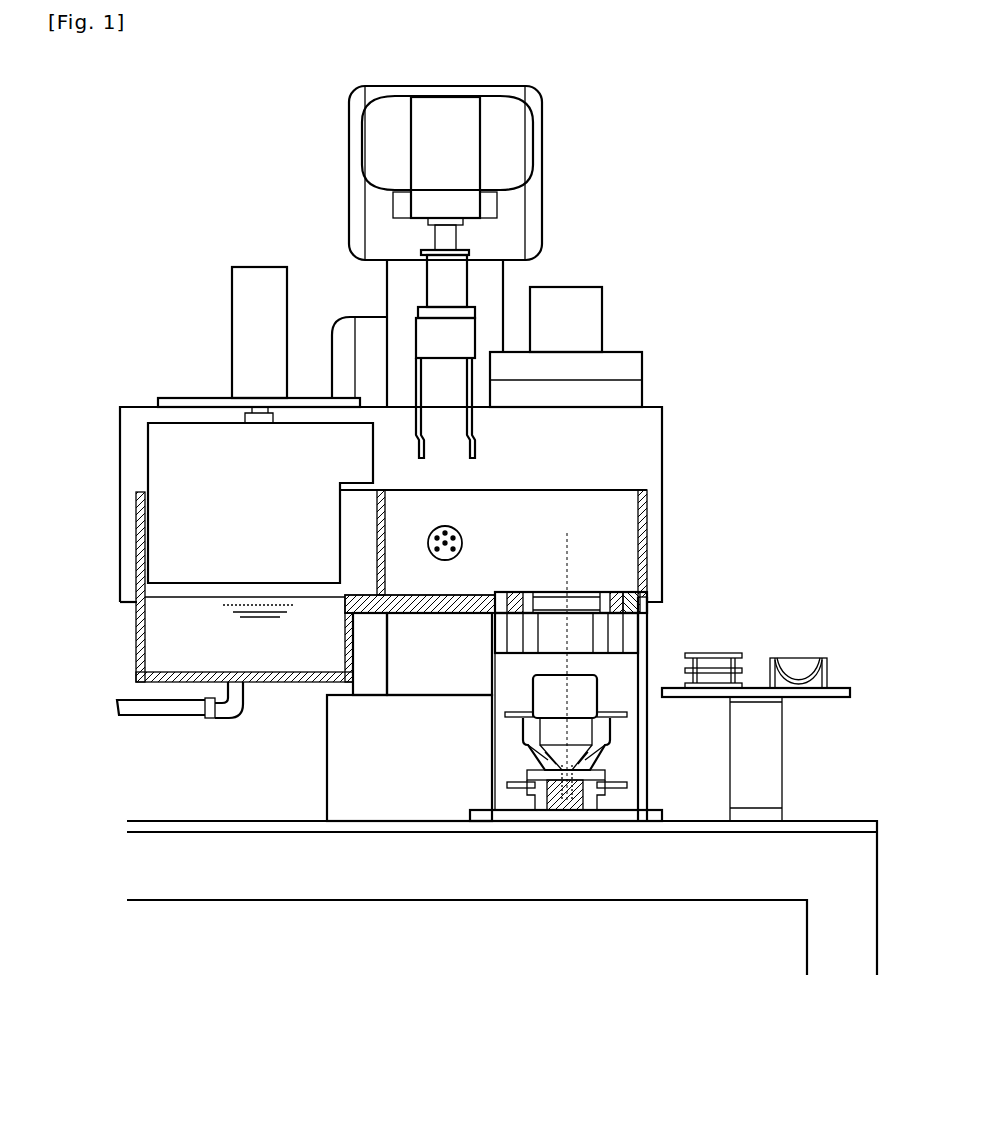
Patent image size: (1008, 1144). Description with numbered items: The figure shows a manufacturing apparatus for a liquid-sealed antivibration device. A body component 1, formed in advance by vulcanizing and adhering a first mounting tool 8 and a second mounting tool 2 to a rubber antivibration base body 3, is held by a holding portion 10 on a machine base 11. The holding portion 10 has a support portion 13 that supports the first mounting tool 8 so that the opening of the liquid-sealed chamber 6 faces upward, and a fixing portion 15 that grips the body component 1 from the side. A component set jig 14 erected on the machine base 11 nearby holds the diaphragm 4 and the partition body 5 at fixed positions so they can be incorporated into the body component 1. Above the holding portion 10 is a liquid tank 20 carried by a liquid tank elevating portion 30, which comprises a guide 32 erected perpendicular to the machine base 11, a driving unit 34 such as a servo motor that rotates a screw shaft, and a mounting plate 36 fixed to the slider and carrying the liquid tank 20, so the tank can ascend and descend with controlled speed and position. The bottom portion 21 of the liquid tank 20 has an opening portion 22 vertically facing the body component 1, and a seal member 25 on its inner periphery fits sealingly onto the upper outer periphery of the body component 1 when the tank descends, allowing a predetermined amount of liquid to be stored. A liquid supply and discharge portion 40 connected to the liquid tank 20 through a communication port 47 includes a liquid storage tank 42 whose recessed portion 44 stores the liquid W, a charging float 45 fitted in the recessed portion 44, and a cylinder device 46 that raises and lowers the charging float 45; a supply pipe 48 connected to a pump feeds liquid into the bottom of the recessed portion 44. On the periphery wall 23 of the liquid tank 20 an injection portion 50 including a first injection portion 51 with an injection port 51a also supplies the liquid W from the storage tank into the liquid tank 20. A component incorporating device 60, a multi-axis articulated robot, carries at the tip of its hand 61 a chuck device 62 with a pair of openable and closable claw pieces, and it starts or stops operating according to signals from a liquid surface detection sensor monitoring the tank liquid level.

The body component 1 is at (517, 764).
The second mounting tool 2 is at (525, 735).
The antivibration base body 3 is at (545, 768).
The diaphragm 4 is at (800, 660).
The partition body 5 is at (707, 653).
The liquid-sealed chamber 6 is at (553, 680).
The first mounting tool 8 is at (530, 775).
The holding portion 10 is at (596, 812).
The machine base 11 is at (815, 821).
The support portion 13 is at (538, 812).
The component set jig 14 is at (800, 697).
The fixing portion 15 is at (515, 712).
The liquid tank 20 is at (649, 522).
The bottom portion 21 is at (465, 592).
The opening portion 22 is at (571, 575).
The periphery wall 23 is at (437, 507).
The seal member 25 is at (600, 592).
The liquid tank elevating portion 30 is at (645, 386).
The guide 32 is at (620, 632).
The driving unit 34 is at (600, 312).
The mounting plate 36 is at (630, 438).
The liquid supply and discharge portion 40 is at (197, 569).
The liquid storage tank 42 is at (140, 570).
The recessed portion 44 is at (215, 614).
The charging float 45 is at (162, 459).
The cylinder device 46 is at (243, 340).
The communication port 47 is at (368, 592).
The supply pipe 48 is at (130, 703).
The sensor unit 50 is at (439, 654).
The first injection portion 51 is at (439, 626).
The injection port 51a is at (463, 544).
The component incorporating device 60 is at (348, 86).
The hand 61 is at (433, 297).
The chuck device 62 is at (473, 428).
The liquid W is at (238, 581).